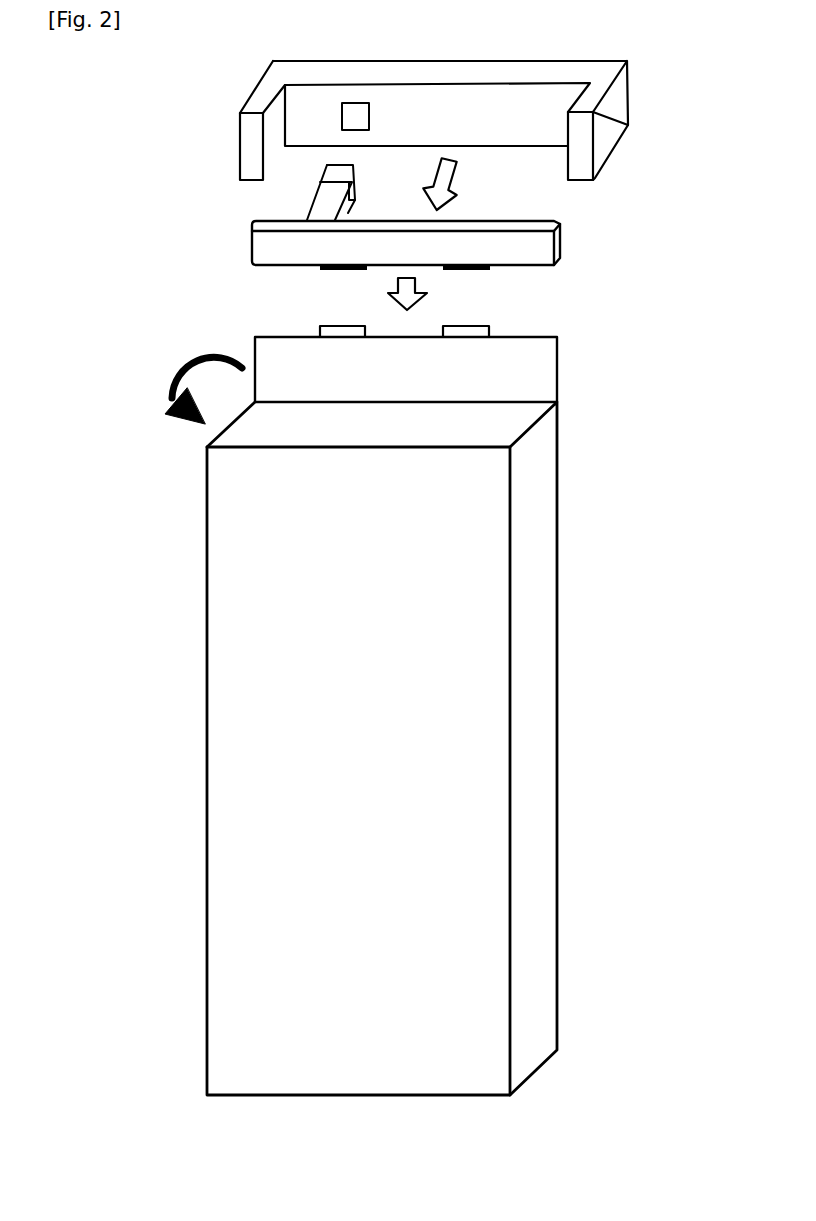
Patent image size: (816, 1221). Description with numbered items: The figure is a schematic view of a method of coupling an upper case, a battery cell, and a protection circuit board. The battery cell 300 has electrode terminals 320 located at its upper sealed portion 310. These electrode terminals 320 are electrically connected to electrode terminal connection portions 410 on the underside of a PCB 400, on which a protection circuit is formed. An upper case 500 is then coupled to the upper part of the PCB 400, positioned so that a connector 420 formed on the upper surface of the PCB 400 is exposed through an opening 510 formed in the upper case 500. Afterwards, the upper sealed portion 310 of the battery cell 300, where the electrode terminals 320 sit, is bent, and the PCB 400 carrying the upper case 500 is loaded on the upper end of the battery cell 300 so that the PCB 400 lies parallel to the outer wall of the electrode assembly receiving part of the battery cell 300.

The battery cell 300 is at (237, 813).
The upper sealed portion 310 is at (542, 383).
The electrode terminals 320 is at (493, 326).
The PCB 400 is at (258, 243).
The electrode terminal connection portions 410 is at (340, 270).
The connector 420 is at (325, 190).
The upper case 500 is at (243, 138).
The opening 510 is at (352, 118).